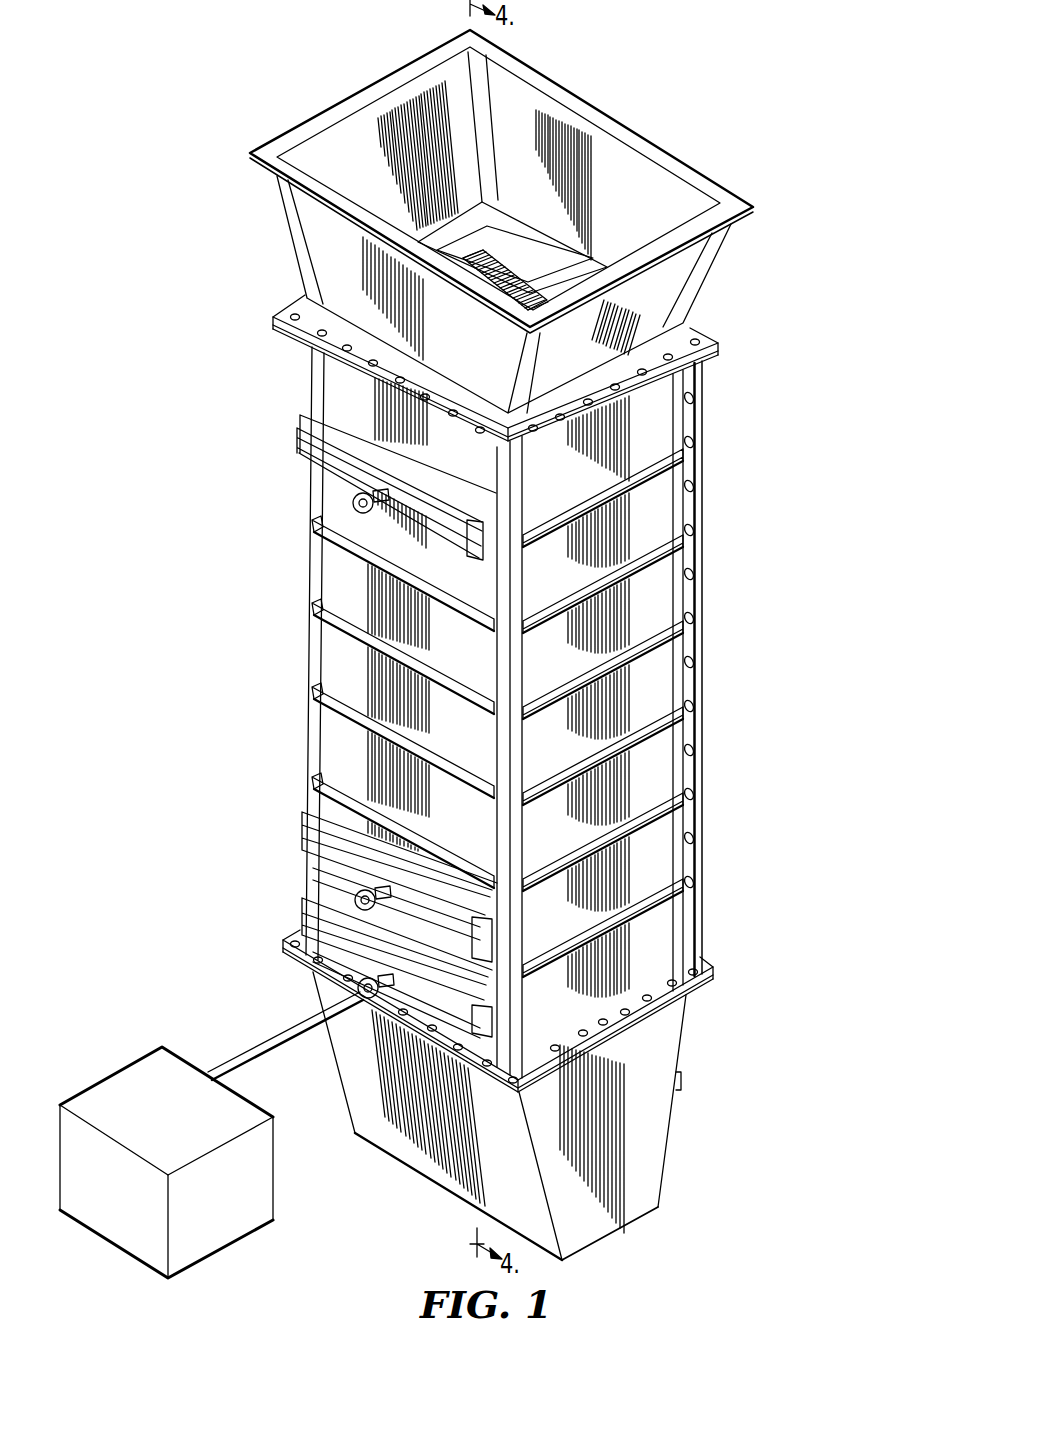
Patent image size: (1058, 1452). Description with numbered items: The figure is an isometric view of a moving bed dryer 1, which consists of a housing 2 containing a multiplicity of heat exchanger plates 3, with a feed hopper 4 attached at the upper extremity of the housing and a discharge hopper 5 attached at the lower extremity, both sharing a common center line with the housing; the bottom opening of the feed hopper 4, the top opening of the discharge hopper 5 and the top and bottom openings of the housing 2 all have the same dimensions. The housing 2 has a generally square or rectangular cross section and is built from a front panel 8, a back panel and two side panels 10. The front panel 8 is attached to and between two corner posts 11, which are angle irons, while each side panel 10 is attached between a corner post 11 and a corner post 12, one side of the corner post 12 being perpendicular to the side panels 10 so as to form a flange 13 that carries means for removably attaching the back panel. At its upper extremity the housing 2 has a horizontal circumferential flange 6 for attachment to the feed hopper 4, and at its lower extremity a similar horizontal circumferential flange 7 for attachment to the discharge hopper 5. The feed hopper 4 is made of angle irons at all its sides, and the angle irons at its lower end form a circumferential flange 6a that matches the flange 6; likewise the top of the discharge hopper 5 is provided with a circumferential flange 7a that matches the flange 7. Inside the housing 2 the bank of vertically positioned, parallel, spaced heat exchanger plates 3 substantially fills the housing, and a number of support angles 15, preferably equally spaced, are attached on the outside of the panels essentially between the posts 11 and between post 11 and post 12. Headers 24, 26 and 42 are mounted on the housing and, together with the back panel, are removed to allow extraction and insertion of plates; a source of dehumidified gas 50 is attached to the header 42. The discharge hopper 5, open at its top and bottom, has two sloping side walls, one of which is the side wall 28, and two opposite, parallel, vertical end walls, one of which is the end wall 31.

The moving bed dryer 1 is at (711, 657).
The housing 2 is at (665, 587).
The heat exchanger plates 3 is at (508, 273).
The feed hopper 4 is at (690, 276).
The discharge hopper 5 is at (518, 1116).
The horizontal circumferential flange 6 is at (712, 353).
The circumferential flange 6a is at (701, 338).
The horizontal circumferential flange 7 is at (283, 946).
The circumferential flange 7a is at (290, 962).
The front panel 8 is at (332, 577).
The side panels 10 is at (668, 766).
The corner posts 11 is at (318, 737).
The corner post 12 is at (673, 690).
The flange 13 is at (705, 733).
The support angles 15 is at (675, 547).
The header 24 is at (300, 832).
The header 26 is at (298, 442).
The sloping side wall 28 is at (390, 1135).
The vertical end wall 31 is at (660, 1128).
The header 42 is at (298, 912).
The source of dehumidified gas 50 is at (120, 1093).